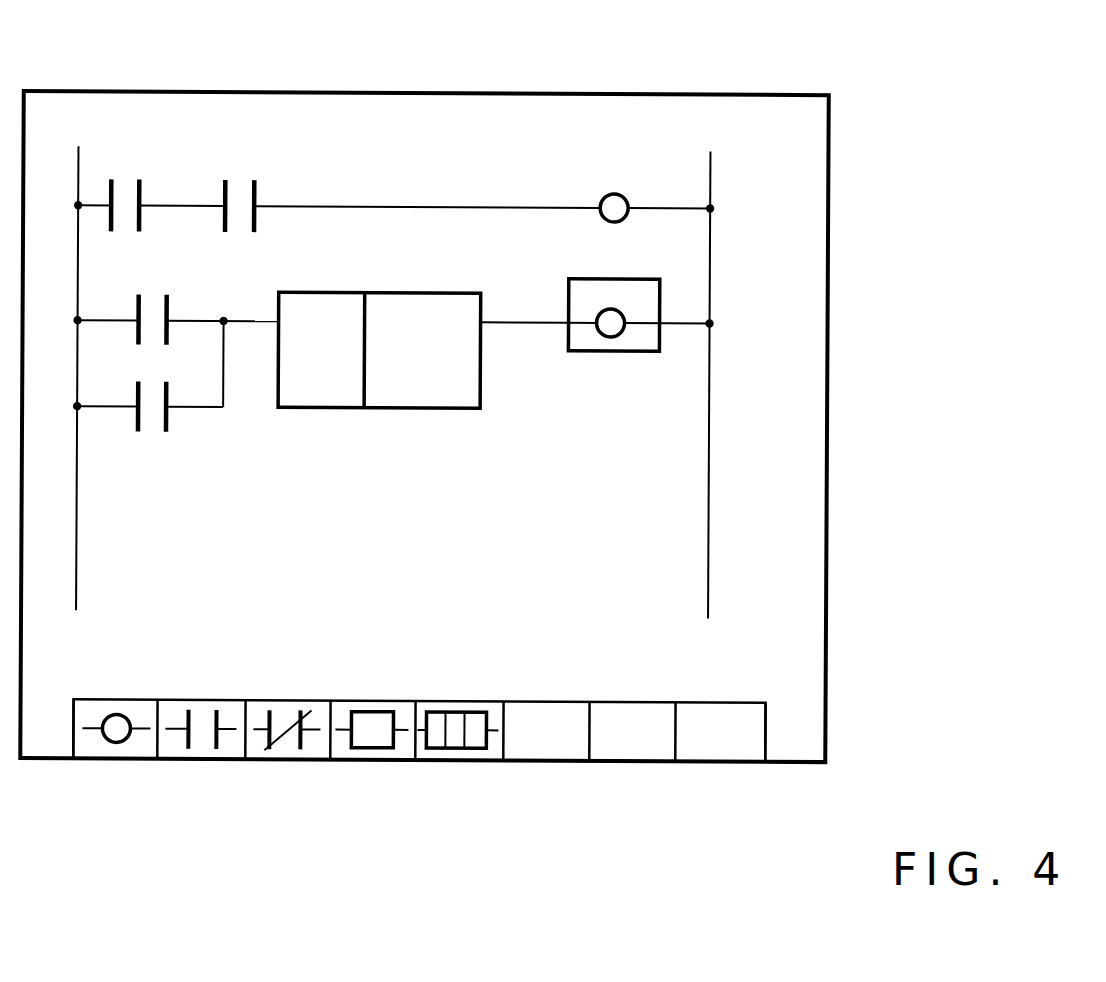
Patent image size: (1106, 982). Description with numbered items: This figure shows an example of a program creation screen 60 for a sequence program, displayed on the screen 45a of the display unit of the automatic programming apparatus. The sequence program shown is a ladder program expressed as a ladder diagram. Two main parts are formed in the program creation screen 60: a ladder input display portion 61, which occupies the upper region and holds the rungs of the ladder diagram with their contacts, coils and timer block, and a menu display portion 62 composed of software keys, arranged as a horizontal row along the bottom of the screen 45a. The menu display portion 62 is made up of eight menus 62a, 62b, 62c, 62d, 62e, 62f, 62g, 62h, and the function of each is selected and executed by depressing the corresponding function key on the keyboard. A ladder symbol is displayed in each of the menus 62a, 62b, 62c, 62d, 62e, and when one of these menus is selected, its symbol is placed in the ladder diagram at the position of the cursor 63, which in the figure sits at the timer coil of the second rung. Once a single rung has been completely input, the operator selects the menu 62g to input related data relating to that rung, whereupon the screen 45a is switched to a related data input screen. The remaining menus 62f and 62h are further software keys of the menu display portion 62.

The screen 45a is at (578, 93).
The program creation screen 60 is at (260, 128).
The ladder input display portion 61 is at (683, 178).
The cursor 63 is at (650, 279).
The menu display portion 62 is at (491, 725).
The menu 62a is at (110, 761).
The menu 62b is at (203, 761).
The menu 62c is at (298, 761).
The menu 62d is at (380, 761).
The menu 62e is at (470, 761).
The menu 62f is at (555, 761).
The menu 62g is at (640, 761).
The menu 62h is at (730, 761).